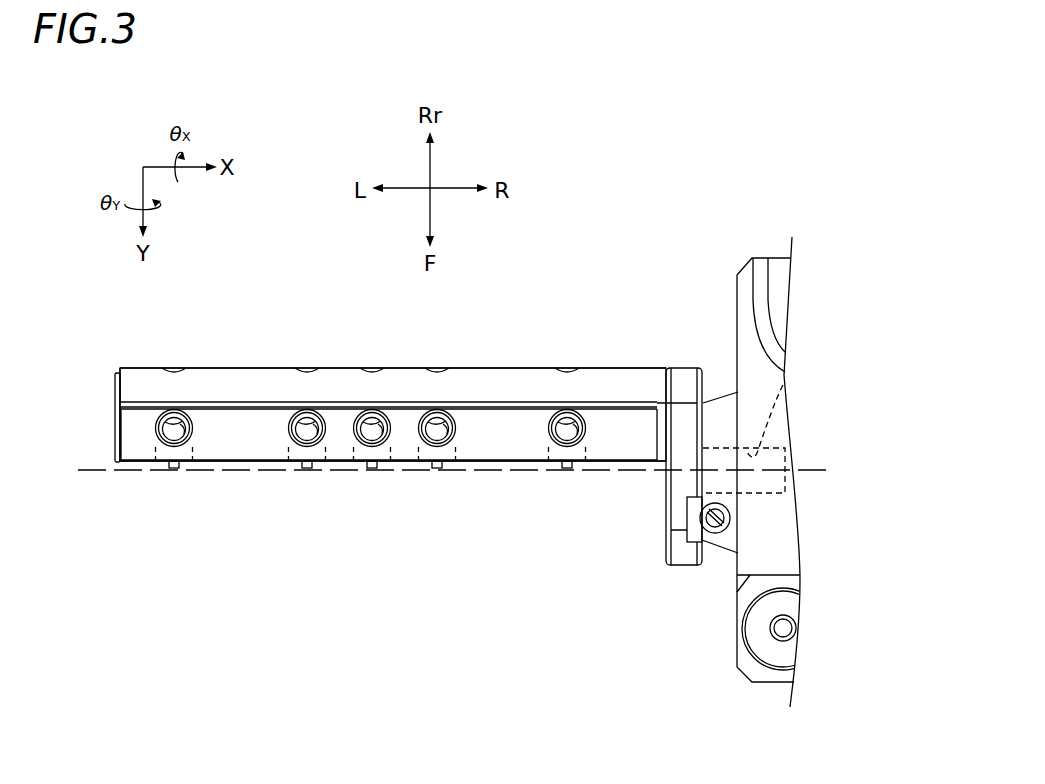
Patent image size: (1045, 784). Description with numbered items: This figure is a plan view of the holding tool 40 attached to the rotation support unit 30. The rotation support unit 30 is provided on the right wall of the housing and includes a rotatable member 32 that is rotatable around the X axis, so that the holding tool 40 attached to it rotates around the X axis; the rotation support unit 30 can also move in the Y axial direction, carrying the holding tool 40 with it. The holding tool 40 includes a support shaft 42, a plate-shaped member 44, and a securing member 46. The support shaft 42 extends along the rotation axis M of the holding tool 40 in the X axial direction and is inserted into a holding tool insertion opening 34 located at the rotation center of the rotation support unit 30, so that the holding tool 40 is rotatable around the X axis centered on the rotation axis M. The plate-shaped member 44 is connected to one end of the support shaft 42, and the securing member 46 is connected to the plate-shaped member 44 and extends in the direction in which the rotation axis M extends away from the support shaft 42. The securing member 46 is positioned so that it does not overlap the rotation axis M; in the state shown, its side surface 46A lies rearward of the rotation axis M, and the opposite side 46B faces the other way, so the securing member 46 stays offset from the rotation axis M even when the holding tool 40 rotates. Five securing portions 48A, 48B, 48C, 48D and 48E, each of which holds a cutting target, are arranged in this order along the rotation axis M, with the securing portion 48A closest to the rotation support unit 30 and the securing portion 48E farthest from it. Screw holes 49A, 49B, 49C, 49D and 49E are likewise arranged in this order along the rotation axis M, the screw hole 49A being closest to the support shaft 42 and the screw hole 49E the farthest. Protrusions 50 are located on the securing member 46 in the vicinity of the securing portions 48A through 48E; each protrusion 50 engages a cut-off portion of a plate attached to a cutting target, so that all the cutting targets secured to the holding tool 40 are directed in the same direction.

The rotation support unit 30 is at (763, 537).
The rotatable member 32 is at (730, 397).
The holding tool insertion opening 34 is at (783, 385).
The holding tool 40 is at (126, 340).
The support shaft 42 is at (776, 444).
The plate-shaped member 44 is at (683, 558).
The securing member 46 is at (251, 365).
The side surface of securing member 46A is at (130, 468).
The side surface of holder 46B is at (130, 425).
The securing portion 48A is at (558, 460).
The securing portion 48B is at (430, 460).
The securing portion 48C is at (363, 460).
The securing portion 48D is at (298, 460).
The securing portion 48E is at (167, 453).
The screw hole 49A is at (582, 422).
The screw hole 49B is at (452, 421).
The screw hole 49C is at (386, 421).
The screw hole 49D is at (320, 421).
The screw hole 49E is at (183, 422).
The protrusion 50 is at (175, 470).
The rotation axis M is at (100, 473).